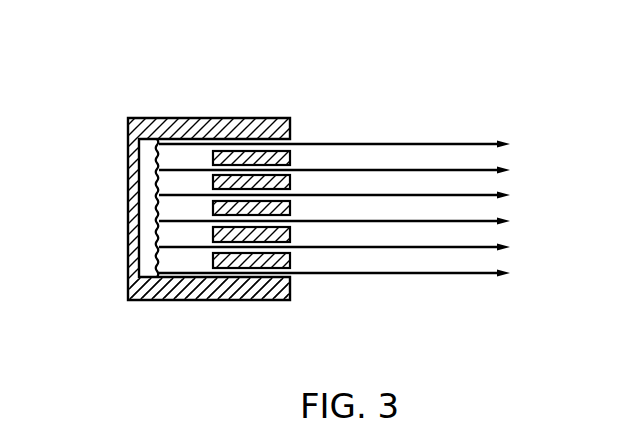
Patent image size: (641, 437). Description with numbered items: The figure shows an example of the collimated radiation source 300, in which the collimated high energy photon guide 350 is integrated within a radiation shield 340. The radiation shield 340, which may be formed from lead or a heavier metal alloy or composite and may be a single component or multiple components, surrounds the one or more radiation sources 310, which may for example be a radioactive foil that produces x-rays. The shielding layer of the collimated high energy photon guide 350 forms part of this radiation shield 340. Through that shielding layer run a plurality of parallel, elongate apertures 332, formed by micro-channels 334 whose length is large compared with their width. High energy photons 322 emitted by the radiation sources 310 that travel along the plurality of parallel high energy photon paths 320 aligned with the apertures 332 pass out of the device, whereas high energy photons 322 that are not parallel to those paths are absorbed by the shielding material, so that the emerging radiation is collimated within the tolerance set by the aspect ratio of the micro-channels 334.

The collimated radiation source 300 is at (332, 198).
The radiation source 310 is at (157, 201).
The parallel high energy photon paths 320 is at (384, 171).
The high energy photons 322 is at (512, 195).
The parallel, elongate apertures 332 is at (292, 196).
The micro-channels 334 is at (238, 301).
The radiation shield 340 is at (120, 313).
The collimated high energy photon guide 350 is at (303, 181).